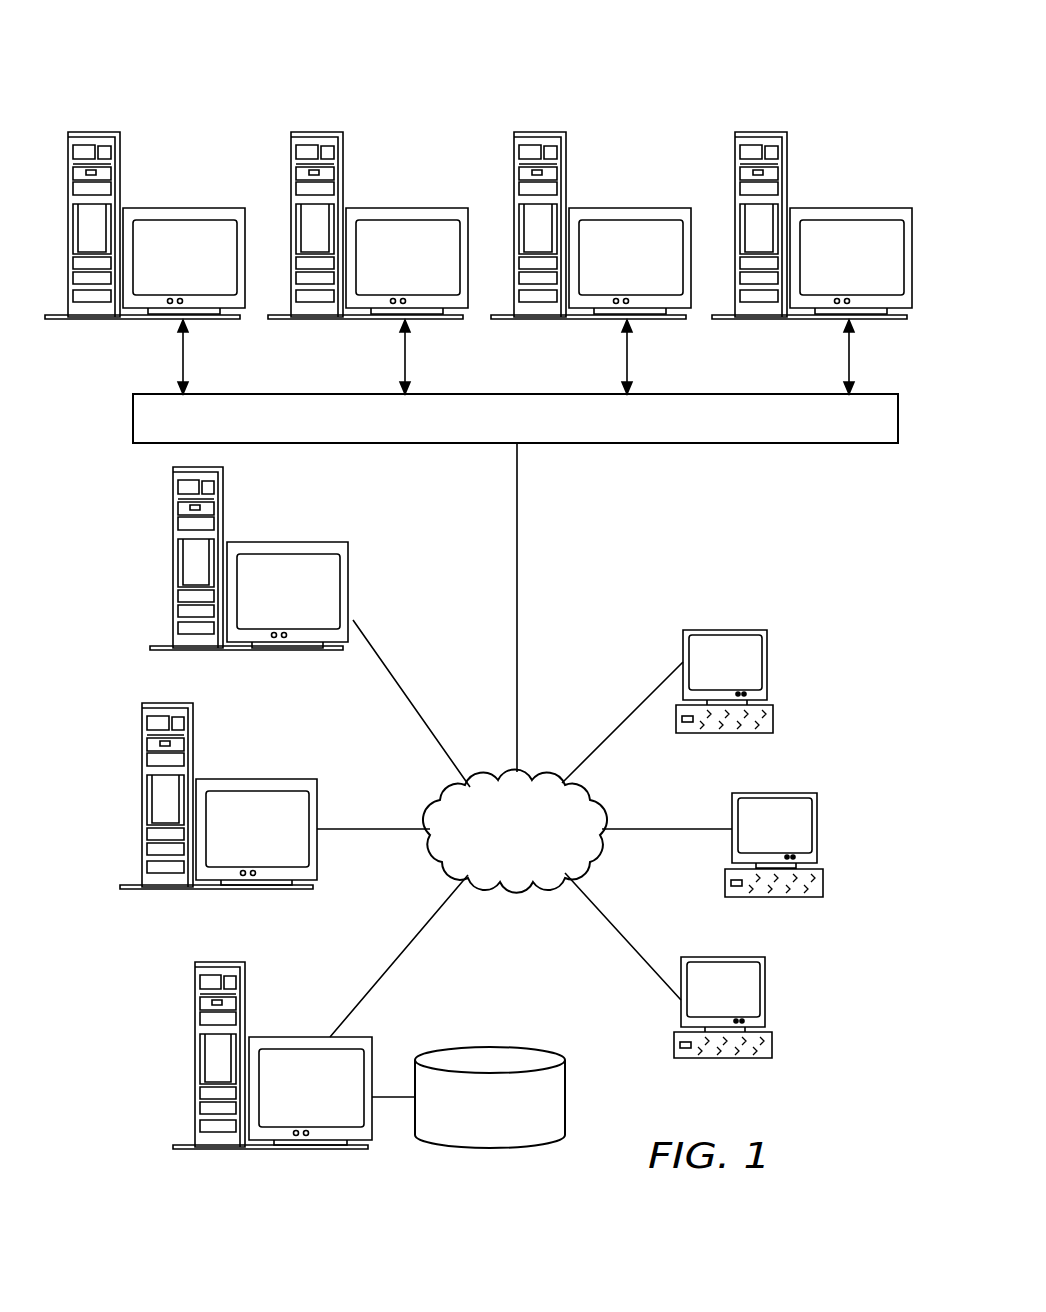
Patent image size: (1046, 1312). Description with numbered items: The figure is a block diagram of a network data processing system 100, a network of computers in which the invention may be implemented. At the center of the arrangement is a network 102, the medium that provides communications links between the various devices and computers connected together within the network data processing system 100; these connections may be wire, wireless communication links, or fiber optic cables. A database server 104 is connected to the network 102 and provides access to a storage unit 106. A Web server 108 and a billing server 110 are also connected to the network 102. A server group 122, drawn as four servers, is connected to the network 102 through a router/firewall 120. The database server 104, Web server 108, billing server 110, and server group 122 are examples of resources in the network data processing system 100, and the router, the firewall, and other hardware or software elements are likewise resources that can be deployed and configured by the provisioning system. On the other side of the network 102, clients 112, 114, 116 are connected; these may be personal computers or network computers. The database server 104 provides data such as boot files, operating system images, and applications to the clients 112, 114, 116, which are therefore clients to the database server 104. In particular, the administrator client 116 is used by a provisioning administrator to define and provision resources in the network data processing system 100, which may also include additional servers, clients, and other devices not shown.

The network data processing system 100 is at (682, 58).
The network 102 is at (513, 888).
The database server 104 is at (195, 1058).
The storage unit 106 is at (503, 1147).
The Web server 108 is at (140, 796).
The billing server 110 is at (172, 563).
The client 112 is at (766, 663).
The client 114 is at (817, 828).
The administrator client 116 is at (767, 992).
The router/firewall 120 is at (133, 420).
The server group 122 is at (88, 131).